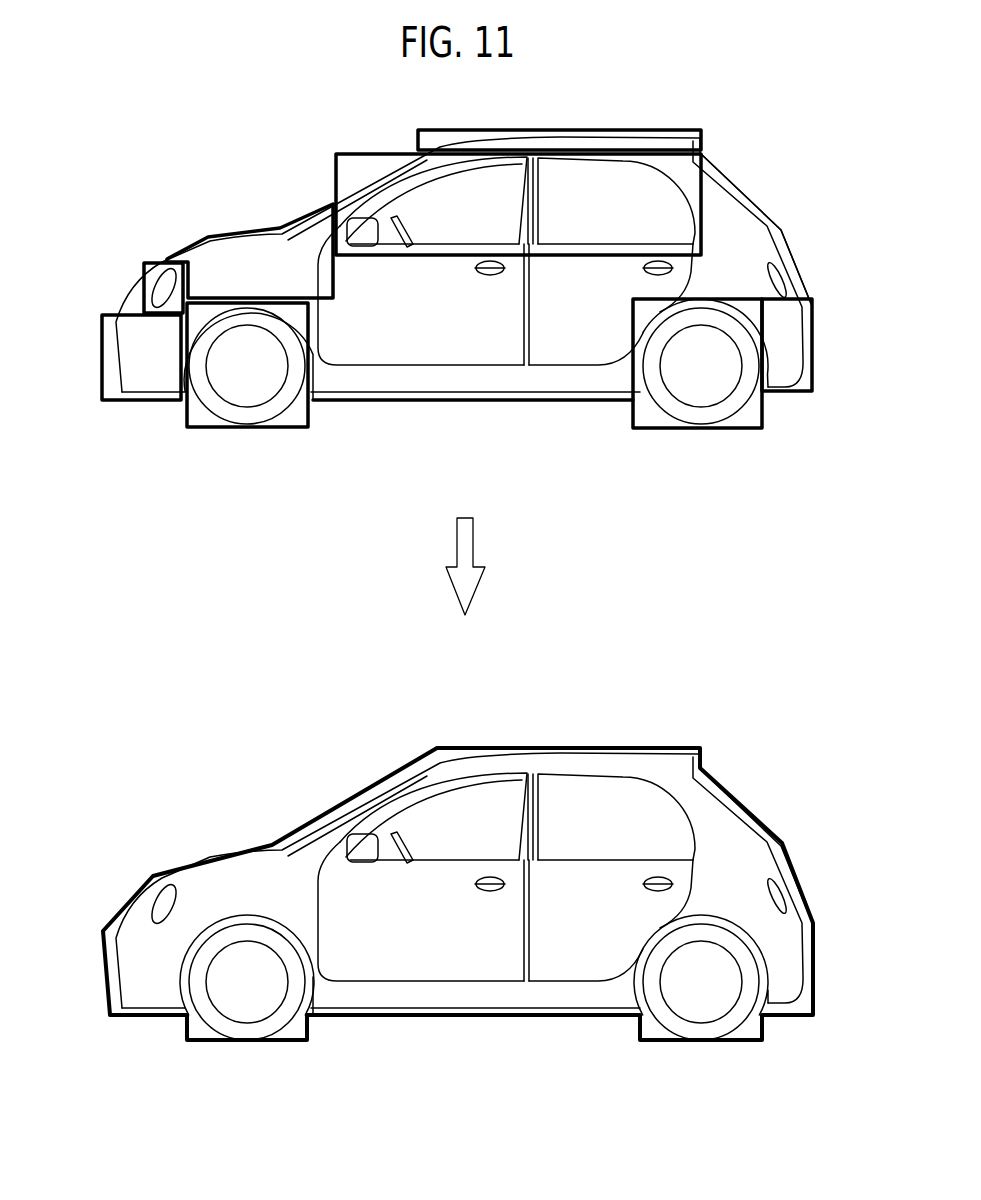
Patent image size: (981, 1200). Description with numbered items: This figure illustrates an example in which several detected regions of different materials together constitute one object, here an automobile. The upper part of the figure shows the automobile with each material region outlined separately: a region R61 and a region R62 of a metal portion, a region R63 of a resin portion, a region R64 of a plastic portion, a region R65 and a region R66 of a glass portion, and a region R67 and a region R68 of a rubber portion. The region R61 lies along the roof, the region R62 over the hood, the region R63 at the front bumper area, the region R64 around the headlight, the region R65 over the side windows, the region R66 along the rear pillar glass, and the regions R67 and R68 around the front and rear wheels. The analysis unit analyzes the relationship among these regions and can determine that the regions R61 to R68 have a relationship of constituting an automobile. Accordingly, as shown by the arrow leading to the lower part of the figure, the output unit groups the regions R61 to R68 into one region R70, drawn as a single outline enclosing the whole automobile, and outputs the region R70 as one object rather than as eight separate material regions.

The region of a metal portion R61 is at (556, 130).
The region of a metal portion R62 is at (222, 233).
The region of a resin portion R63 is at (102, 356).
The region of a plastic portion R64 is at (143, 271).
The region of a glass portion R65 is at (352, 153).
The region of a glass portion R66 is at (698, 200).
The region of a rubber portion R67 is at (247, 429).
The region of a rubber portion R68 is at (703, 429).
The region R70 is at (565, 746).